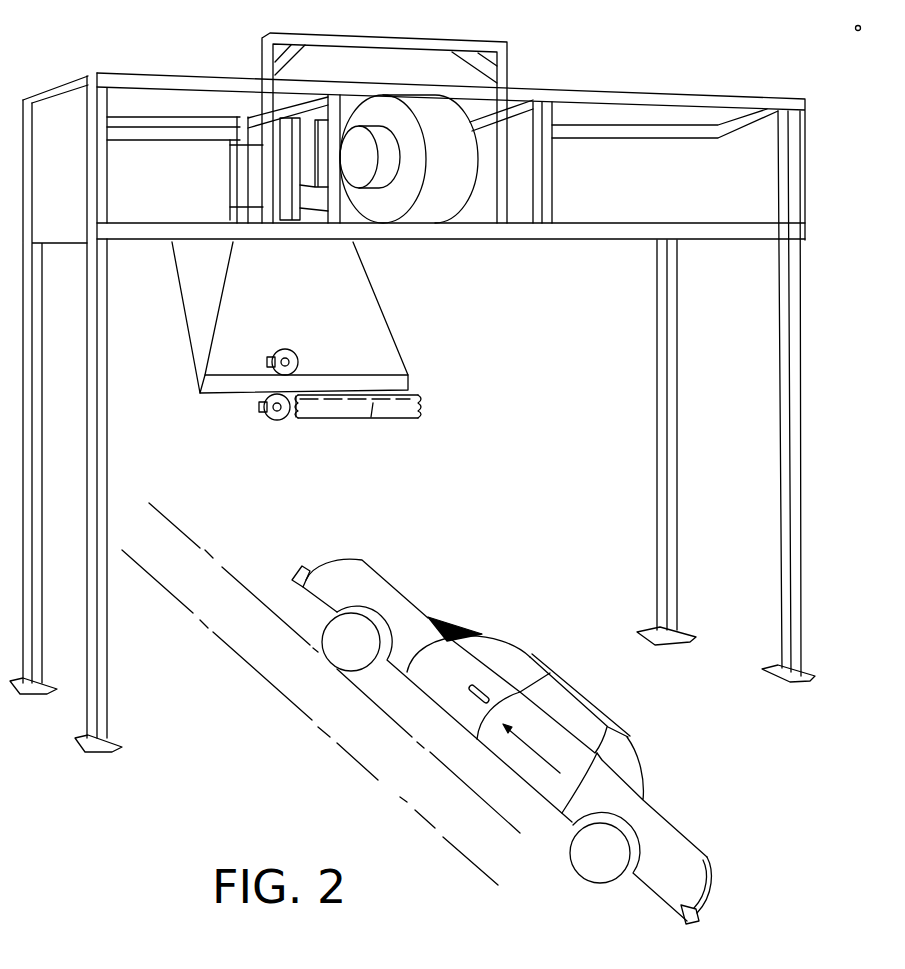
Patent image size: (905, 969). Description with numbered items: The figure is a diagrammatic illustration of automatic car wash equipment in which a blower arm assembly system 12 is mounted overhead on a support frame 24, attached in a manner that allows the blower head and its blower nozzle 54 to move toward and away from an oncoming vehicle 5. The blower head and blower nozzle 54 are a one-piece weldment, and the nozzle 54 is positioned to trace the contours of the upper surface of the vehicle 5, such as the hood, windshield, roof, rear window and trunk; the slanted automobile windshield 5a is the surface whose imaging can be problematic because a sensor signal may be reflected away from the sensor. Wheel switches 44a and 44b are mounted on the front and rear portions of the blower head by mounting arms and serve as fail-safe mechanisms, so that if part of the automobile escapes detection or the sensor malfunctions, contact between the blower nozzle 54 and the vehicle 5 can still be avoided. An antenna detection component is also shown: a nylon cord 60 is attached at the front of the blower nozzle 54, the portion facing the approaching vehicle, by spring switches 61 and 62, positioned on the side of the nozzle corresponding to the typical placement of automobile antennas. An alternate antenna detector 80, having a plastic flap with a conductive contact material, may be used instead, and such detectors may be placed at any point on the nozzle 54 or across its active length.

The support frame 24 is at (806, 133).
The blower arm assembly system 12 is at (372, 275).
The blower nozzle 54 is at (410, 375).
The wheel switch 44a is at (317, 325).
The wheel switch 44b is at (274, 419).
The nylon cord 60 is at (413, 420).
The spring switch 61 is at (427, 406).
The spring switch 62 is at (294, 422).
The alternate antenna detector 80 is at (366, 431).
The vehicle 5 is at (653, 808).
The automobile windshield 5a is at (457, 629).